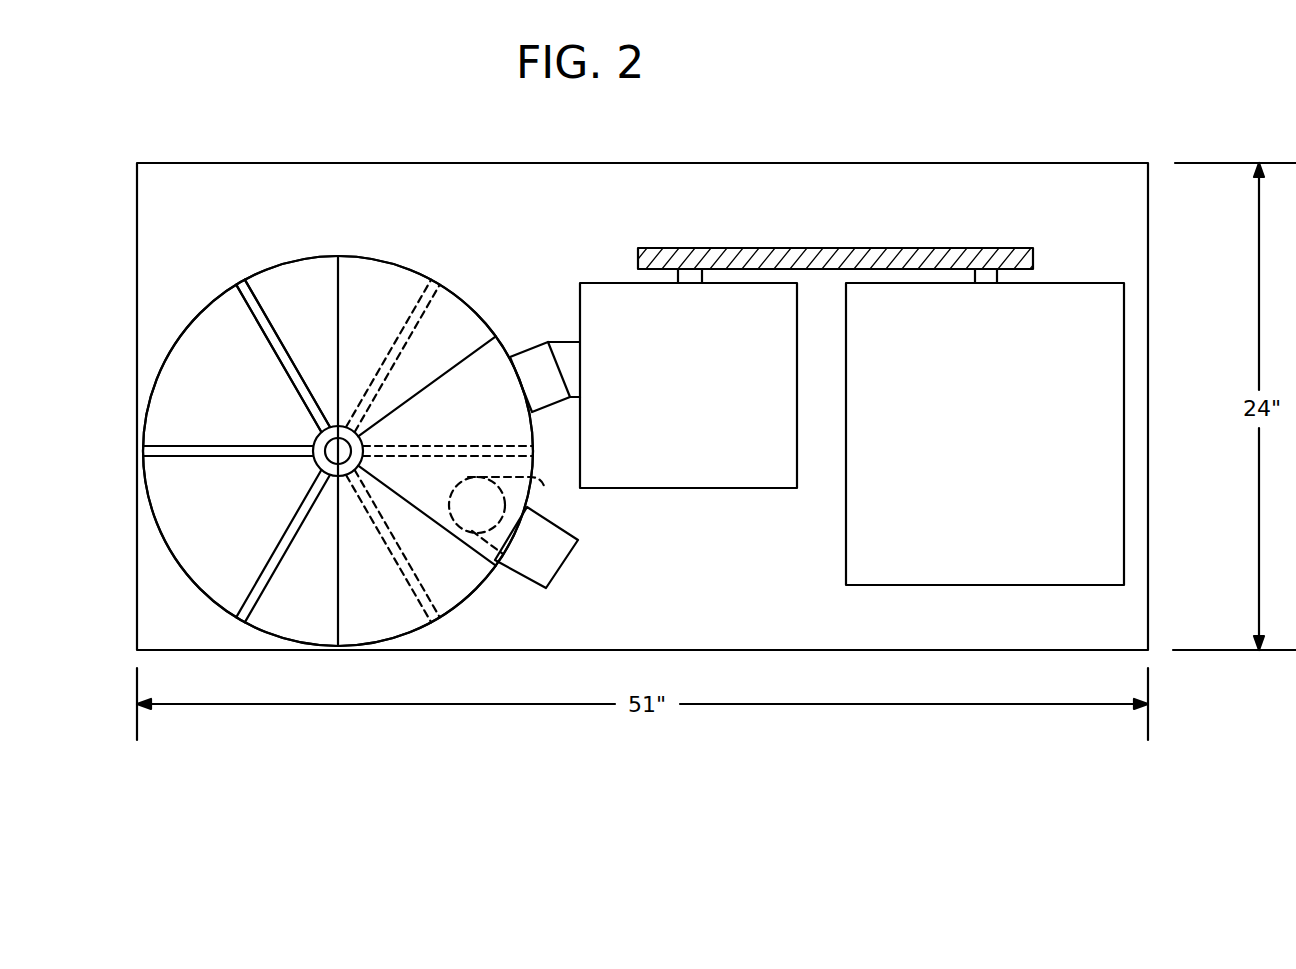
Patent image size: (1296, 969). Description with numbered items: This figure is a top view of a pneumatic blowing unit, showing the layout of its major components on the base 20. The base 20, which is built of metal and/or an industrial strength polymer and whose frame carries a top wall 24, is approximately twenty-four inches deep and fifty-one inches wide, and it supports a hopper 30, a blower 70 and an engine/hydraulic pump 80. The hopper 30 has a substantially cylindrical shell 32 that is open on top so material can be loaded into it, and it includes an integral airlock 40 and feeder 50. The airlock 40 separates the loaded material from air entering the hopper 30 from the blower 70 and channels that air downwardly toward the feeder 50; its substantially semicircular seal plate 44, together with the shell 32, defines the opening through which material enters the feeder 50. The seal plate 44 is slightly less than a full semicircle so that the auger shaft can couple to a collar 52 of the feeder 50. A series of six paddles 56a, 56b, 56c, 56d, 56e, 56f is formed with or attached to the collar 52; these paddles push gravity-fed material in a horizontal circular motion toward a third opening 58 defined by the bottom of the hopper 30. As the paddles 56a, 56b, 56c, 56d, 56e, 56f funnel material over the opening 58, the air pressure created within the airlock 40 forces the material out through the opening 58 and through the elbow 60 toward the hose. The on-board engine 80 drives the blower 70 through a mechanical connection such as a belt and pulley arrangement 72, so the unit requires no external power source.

The base 20 is at (1155, 158).
The top wall 24 is at (741, 215).
The hopper 30 is at (205, 297).
The shell 32 is at (177, 567).
The airlock 40 is at (482, 337).
The seal plate 44 is at (355, 287).
The feeder 50 is at (263, 285).
The collar 52 is at (316, 440).
The paddle 56a is at (178, 458).
The paddle 56b is at (283, 540).
The paddle 56c is at (455, 588).
The paddle 56d is at (465, 443).
The paddle 56e is at (408, 320).
The paddle 56f is at (258, 325).
The third opening 58 is at (545, 490).
The elbow 60 is at (562, 566).
The blower 70 is at (702, 401).
The belt and pulley arrangement 72 is at (833, 248).
The engine/hydraulic pump 80 is at (996, 448).